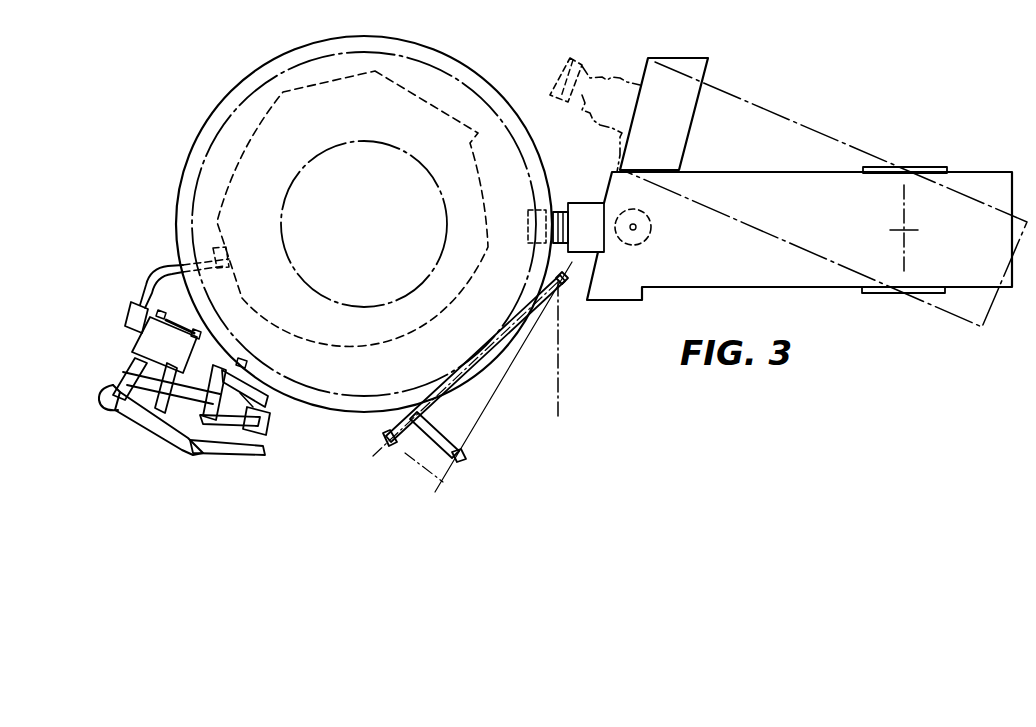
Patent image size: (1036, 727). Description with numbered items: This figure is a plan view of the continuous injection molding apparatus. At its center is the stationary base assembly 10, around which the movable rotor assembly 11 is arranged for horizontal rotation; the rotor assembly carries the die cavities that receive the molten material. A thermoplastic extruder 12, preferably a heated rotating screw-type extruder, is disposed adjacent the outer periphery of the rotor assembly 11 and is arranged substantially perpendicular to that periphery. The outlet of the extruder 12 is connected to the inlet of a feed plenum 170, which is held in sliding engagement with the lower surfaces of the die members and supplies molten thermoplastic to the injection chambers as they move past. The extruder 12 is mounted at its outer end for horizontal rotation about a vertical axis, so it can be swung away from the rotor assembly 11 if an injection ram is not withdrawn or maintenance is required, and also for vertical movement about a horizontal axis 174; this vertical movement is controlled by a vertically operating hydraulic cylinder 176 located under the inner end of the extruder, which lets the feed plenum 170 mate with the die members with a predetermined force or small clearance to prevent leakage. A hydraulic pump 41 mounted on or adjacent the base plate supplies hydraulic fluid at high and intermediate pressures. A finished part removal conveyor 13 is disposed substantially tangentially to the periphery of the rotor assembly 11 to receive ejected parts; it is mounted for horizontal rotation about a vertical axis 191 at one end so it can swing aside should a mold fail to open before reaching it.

The stationary base assembly 10 is at (438, 182).
The movable rotor assembly 11 is at (440, 52).
The thermoplastic extruder 12 is at (842, 218).
The finished part removal conveyor 13 is at (432, 413).
The hydraulic pump 41 is at (118, 351).
The feed plenum 170 is at (553, 206).
The horizontal axis 174 is at (907, 258).
The vertically operating hydraulic cylinder 176 is at (650, 232).
The vertical axis 191 is at (567, 287).